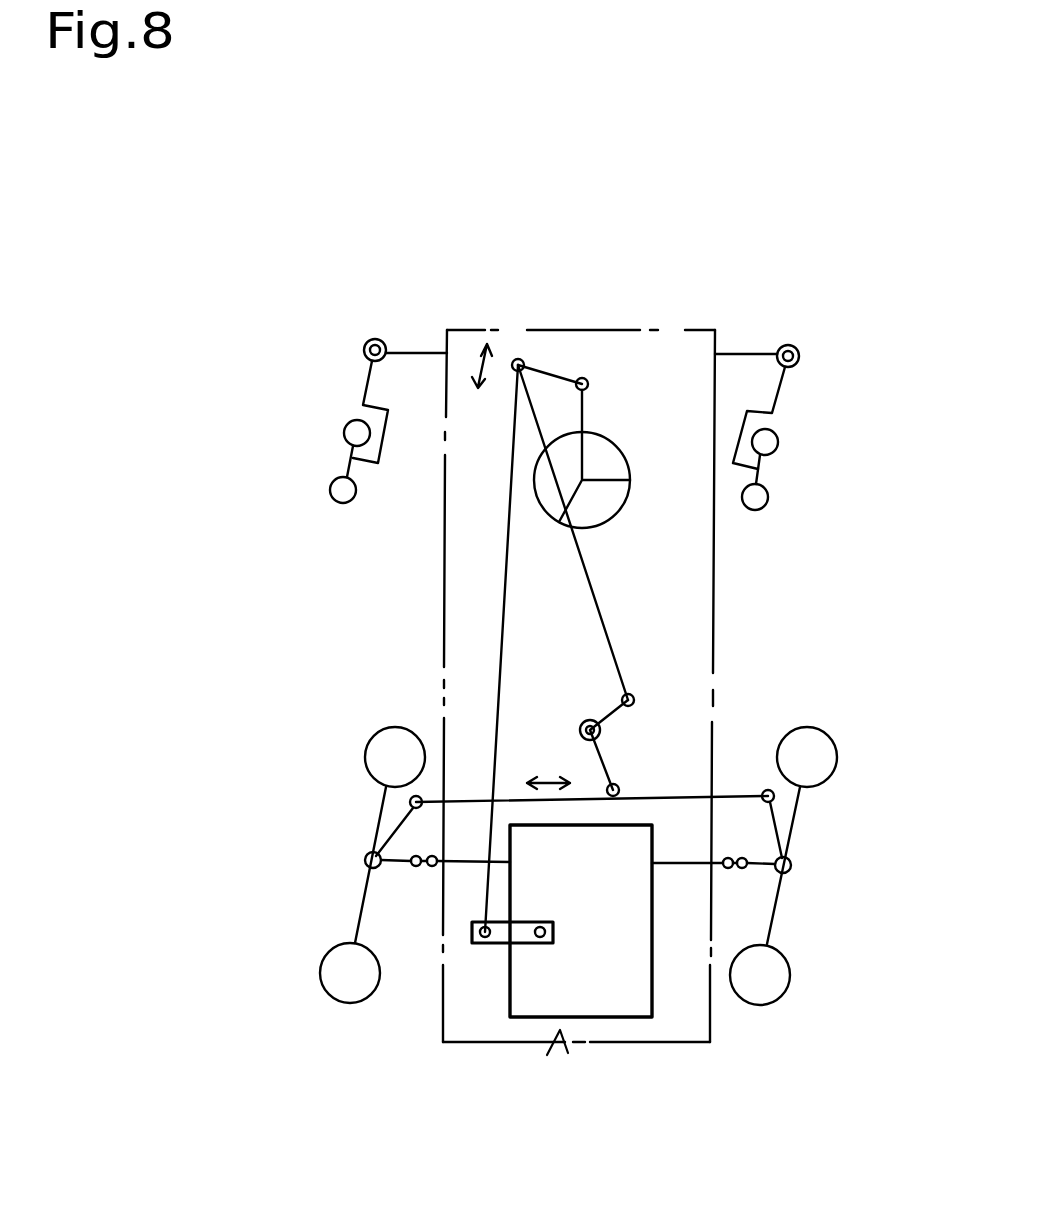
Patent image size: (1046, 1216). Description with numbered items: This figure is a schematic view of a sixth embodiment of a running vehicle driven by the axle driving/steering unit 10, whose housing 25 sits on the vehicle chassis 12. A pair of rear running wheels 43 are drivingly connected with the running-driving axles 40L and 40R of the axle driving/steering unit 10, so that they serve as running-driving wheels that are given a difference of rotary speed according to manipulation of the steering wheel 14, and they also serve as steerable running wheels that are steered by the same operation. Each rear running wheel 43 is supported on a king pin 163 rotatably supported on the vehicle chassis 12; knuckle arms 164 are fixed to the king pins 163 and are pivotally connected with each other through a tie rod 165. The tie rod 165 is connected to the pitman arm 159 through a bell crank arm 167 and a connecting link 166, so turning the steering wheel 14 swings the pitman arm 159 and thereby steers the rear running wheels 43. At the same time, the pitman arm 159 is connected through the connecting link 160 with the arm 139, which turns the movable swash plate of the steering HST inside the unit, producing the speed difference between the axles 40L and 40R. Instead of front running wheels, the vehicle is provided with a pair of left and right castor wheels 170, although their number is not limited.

The axle driving/steering unit 10 is at (560, 1032).
The vehicle chassis 12 is at (658, 1043).
The steering wheel 14 is at (631, 490).
The housing 25 is at (525, 1015).
The running-driving axle 40L is at (467, 866).
The running-driving axle 40R is at (685, 867).
The rear running wheels 43 is at (378, 732).
The arm 139 is at (492, 945).
The pitman arm 159 is at (552, 372).
The connecting link 160 is at (505, 586).
The king pins 163 is at (365, 858).
The knuckle arms 164 is at (400, 824).
The tie rod 165 is at (652, 795).
The connecting link 166 is at (597, 598).
The bell crank arm 167 is at (621, 700).
The castor wheels 170 is at (333, 500).